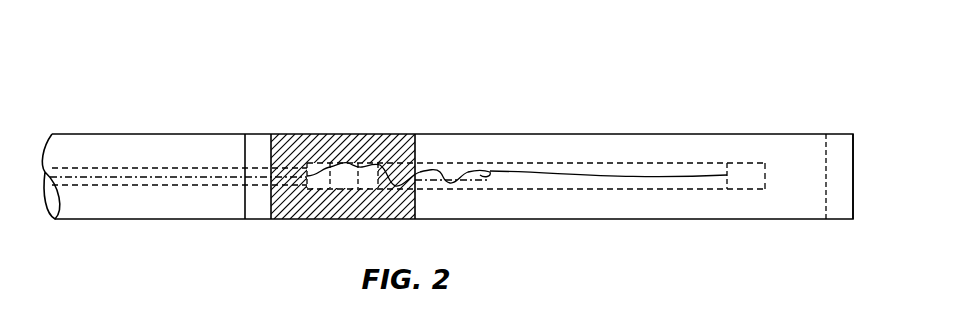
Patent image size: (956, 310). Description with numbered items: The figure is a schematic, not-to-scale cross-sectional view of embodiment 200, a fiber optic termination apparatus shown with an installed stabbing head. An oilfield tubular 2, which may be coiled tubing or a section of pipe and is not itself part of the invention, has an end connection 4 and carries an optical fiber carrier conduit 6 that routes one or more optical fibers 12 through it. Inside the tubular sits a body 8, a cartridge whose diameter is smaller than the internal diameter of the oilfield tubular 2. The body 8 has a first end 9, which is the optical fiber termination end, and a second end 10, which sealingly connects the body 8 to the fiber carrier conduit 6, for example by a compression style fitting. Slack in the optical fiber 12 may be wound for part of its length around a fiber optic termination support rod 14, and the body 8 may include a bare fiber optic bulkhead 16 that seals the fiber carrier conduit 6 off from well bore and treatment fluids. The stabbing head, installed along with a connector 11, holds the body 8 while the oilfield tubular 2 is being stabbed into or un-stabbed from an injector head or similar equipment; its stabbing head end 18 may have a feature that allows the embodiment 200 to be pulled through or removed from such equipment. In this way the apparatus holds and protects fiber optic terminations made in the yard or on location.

The embodiment 200 is at (728, 29).
The oilfield tubular 2 is at (93, 134).
The end connection 4 is at (258, 134).
The optical fiber carrier conduit 6 is at (187, 168).
The body 8 is at (505, 161).
The first end 9 is at (746, 163).
The second end 10 is at (318, 163).
The connector 11 is at (298, 134).
The optical fiber 12 is at (146, 177).
The fiber optic termination support rod 14 is at (447, 171).
The bare fiber optic bulkhead 16 is at (367, 163).
The stabbing head end 18 is at (838, 134).